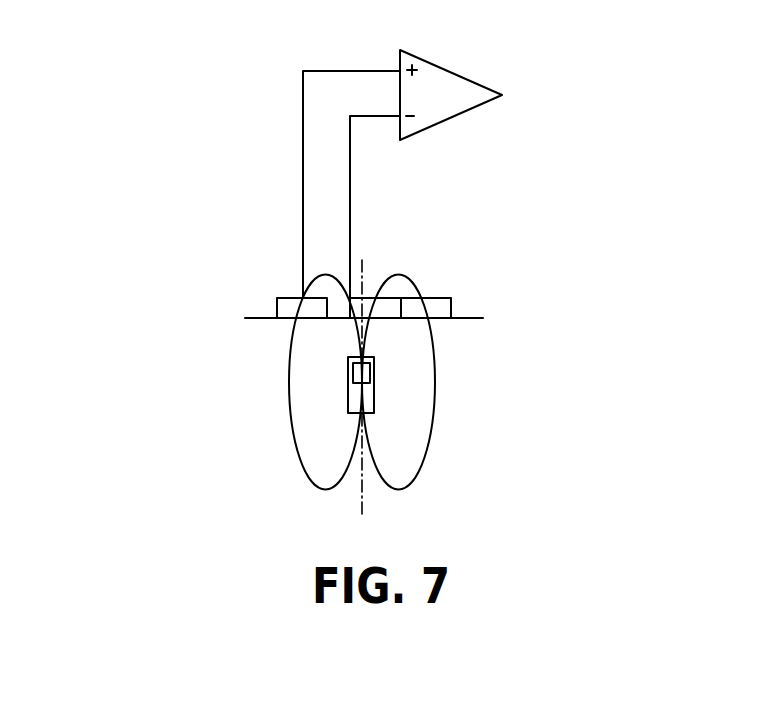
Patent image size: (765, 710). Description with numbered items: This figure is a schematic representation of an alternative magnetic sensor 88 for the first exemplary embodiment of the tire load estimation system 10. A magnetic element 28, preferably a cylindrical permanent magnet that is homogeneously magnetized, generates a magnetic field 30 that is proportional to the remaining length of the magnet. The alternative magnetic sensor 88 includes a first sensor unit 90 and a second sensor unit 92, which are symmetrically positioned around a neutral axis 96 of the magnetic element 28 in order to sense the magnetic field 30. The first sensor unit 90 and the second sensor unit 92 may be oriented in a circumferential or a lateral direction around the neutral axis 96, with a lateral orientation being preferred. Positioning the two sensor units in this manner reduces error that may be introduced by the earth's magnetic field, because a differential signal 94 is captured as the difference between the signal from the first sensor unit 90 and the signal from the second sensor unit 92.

The position sensing system 10 is at (184, 477).
The magnetic element 28 is at (347, 410).
The magnetic field 30 is at (289, 400).
The alternative magnetic sensor 88 is at (320, 265).
The first sensor unit 90 is at (288, 298).
The second sensor unit 92 is at (432, 298).
The differential signal 94 is at (457, 72).
The neutral axis 96 is at (362, 512).